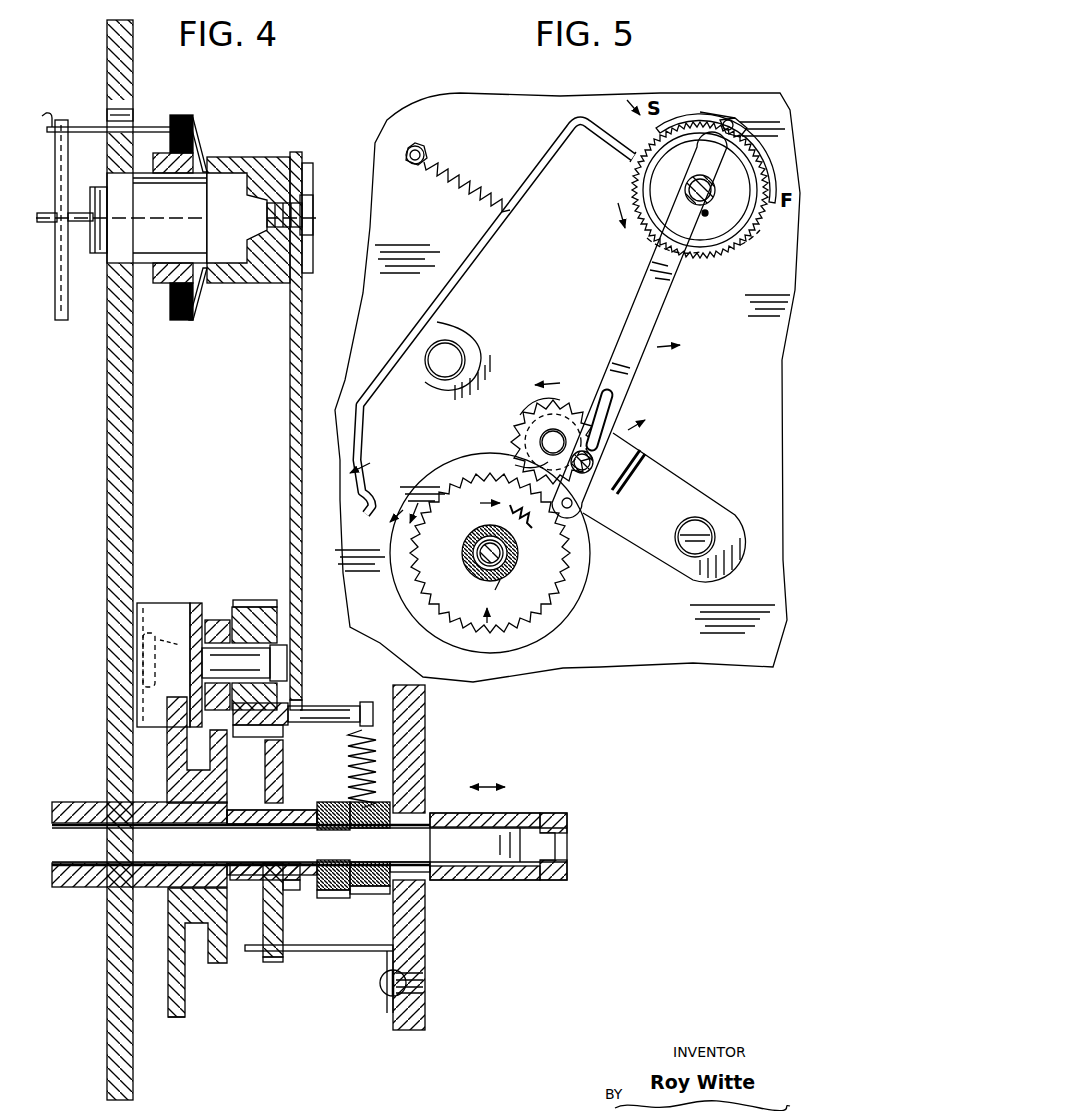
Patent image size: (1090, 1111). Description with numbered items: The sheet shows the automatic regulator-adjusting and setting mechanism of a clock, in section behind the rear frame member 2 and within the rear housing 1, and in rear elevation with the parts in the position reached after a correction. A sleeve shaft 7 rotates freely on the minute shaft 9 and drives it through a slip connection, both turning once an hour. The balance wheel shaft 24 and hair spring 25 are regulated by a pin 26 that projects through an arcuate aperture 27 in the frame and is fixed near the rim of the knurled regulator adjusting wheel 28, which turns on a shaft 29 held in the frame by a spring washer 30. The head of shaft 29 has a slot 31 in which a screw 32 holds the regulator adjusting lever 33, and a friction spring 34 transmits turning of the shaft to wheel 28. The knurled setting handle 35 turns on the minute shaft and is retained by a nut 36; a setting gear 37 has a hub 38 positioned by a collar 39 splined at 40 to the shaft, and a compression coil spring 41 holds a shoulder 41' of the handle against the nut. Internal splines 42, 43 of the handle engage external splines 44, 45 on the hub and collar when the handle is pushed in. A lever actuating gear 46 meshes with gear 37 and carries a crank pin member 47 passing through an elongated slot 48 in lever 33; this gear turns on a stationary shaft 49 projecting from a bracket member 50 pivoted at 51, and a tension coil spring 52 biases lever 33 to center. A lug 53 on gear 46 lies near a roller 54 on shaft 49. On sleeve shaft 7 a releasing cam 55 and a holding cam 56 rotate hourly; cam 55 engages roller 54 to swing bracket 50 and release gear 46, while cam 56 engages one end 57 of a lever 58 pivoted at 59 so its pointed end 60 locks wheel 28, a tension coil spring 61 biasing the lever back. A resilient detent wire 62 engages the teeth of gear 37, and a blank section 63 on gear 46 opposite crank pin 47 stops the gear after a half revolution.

In FIG. 4, the rear housing 1 is at (420, 720).
In FIG. 4, the rear frame member 2 is at (120, 463).
In FIG. 5, the rear frame member 2 is at (685, 665).
In FIG. 4, the sleeve shaft 7 is at (73, 802).
In FIG. 4, the minute shaft 9 is at (92, 870).
In FIG. 5, the minute shaft 9 is at (462, 548).
In FIG. 4, the balance wheel shaft 24 is at (80, 210).
In FIG. 4, the hair spring 25 is at (66, 310).
In FIG. 5, the hair spring 25 is at (775, 175).
In FIG. 4, the pin 26 is at (84, 126).
In FIG. 5, the pin 26 is at (737, 128).
In FIG. 4, the arcuate aperture 27 is at (128, 114).
In FIG. 5, the arcuate aperture 27 is at (722, 118).
In FIG. 4, the regulator adjusting wheel 28 is at (185, 118).
In FIG. 5, the regulator adjusting wheel 28 is at (647, 238).
In FIG. 4, the shaft 29 is at (165, 250).
In FIG. 5, the shaft 29 is at (665, 188).
In FIG. 4, the spring washer 30 is at (104, 265).
In FIG. 4, the lateral recess or slot 31 is at (305, 175).
In FIG. 5, the lateral recess or slot 31 is at (705, 213).
In FIG. 4, the screw 32 is at (302, 215).
In FIG. 5, the screw 32 is at (712, 190).
In FIG. 4, the regulator adjusting lever 33 is at (290, 432).
In FIG. 5, the regulator adjusting lever 33 is at (647, 327).
In FIG. 4, the friction spring 34 is at (203, 150).
In FIG. 5, the friction spring 34 is at (735, 245).
In FIG. 4, the setting handle 35 is at (530, 813).
In FIG. 5, the setting handle 35 is at (495, 590).
In FIG. 4, the nut 36 is at (560, 868).
In FIG. 4, the setting gear 37 is at (293, 920).
In FIG. 5, the setting gear 37 is at (568, 597).
In FIG. 4, the hub 38 is at (262, 880).
In FIG. 4, the collar 39 is at (340, 802).
In FIG. 4, the spline 40 is at (355, 845).
In FIG. 4, the compression coil spring 41 is at (423, 884).
In FIG. 5, the compression coil spring 41 is at (507, 553).
In FIG. 4, the shoulder 41' is at (509, 867).
In FIG. 4, the internal spline 42 is at (352, 890).
In FIG. 4, the internal spline 43 is at (390, 886).
In FIG. 5, the internal spline 43 is at (466, 575).
In FIG. 4, the external spline 44 is at (298, 812).
In FIG. 4, the external spline 45 is at (322, 800).
In FIG. 4, the lever actuating gear 46 is at (262, 600).
In FIG. 5, the lever actuating gear 46 is at (573, 393).
In FIG. 4, the crank pin member 47 is at (318, 710).
In FIG. 5, the crank pin member 47 is at (597, 462).
In FIG. 4, the elongated slot 48 is at (300, 606).
In FIG. 5, the elongated slot 48 is at (608, 400).
In FIG. 4, the stationary shaft 49 is at (265, 665).
In FIG. 5, the stationary shaft 49 is at (540, 442).
In FIG. 4, the bracket member 50 is at (186, 603).
In FIG. 5, the bracket member 50 is at (648, 452).
In FIG. 4, the pivot 51 is at (164, 648).
In FIG. 5, the pivot 51 is at (700, 530).
In FIG. 4, the tension coil spring 52 is at (378, 768).
In FIG. 5, the tension coil spring 52 is at (522, 535).
In FIG. 4, the lug 53 is at (218, 600).
In FIG. 5, the lug 53 is at (525, 406).
In FIG. 4, the roller 54 is at (193, 645).
In FIG. 5, the roller 54 is at (515, 465).
In FIG. 4, the releasing cam 55 is at (218, 957).
In FIG. 5, the releasing cam 55 is at (578, 505).
In FIG. 4, the holding cam 56 is at (180, 1000).
In FIG. 5, the holding cam 56 is at (430, 470).
In FIG. 5, the end of lever 57 is at (372, 513).
In FIG. 5, the lever 58 is at (480, 252).
In FIG. 5, the pivot 59 is at (452, 362).
In FIG. 5, the pointed end 60 is at (632, 160).
In FIG. 5, the tension coil spring 61 is at (466, 173).
In FIG. 4, the resilient detent member or wire 62 is at (312, 950).
In FIG. 5, the resilient detent member or wire 62 is at (488, 630).
In FIG. 5, the blank section 63 is at (512, 423).